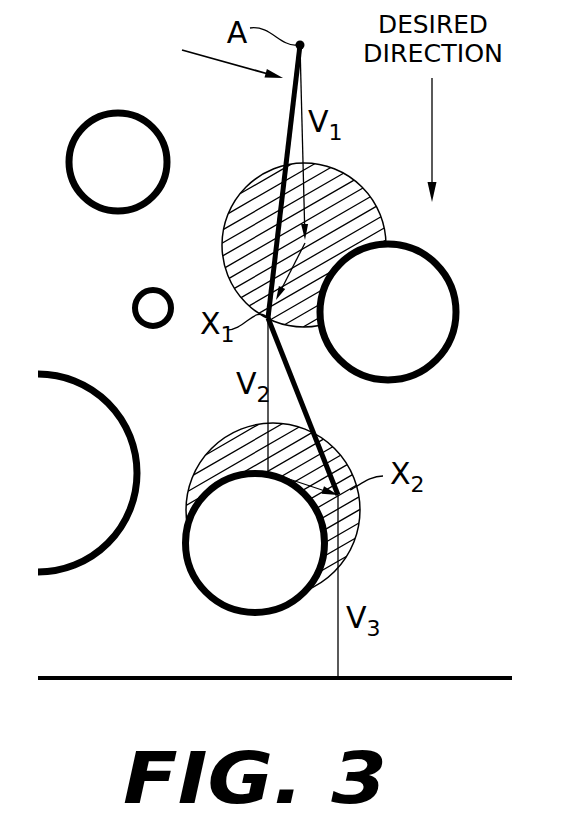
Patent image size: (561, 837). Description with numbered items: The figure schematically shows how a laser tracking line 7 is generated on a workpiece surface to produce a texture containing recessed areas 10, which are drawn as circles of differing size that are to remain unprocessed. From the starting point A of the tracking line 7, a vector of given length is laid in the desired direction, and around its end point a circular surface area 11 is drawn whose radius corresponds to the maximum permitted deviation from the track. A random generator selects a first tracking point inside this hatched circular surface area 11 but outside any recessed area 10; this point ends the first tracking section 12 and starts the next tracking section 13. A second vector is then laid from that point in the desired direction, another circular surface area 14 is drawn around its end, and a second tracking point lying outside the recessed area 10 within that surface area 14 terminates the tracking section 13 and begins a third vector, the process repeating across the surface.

The tracking line 7 is at (222, 52).
The recessed area 10 is at (127, 123).
The circular surface area 11 is at (253, 203).
The tracking section 12 is at (291, 123).
The tracking section 13 is at (308, 410).
The circular surface area 14 is at (225, 450).